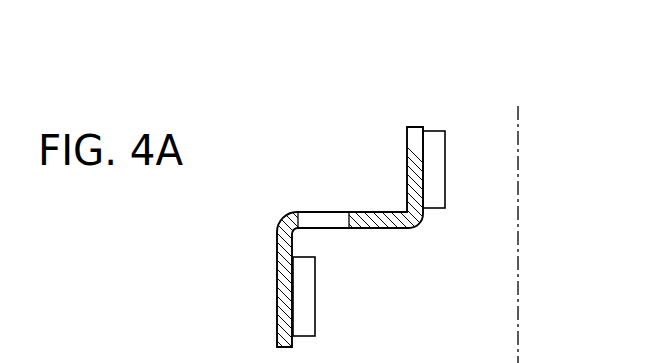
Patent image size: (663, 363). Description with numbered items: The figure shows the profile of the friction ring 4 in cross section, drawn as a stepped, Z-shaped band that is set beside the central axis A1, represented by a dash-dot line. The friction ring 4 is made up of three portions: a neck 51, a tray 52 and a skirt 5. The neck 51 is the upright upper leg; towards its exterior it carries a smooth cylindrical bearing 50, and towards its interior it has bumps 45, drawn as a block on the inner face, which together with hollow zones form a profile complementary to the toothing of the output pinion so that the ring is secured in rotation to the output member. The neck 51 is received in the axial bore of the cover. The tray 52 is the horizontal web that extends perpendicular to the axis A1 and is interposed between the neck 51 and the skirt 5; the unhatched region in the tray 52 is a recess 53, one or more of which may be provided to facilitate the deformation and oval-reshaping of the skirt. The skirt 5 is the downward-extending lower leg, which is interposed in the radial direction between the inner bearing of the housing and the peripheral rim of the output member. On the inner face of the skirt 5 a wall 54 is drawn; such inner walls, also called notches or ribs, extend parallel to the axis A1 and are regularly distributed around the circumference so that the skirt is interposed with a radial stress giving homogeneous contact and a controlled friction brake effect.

The friction ring 4 is at (306, 120).
The skirt 5 is at (266, 282).
The smooth cylindrical bearing 50 is at (405, 165).
The neck 51 is at (421, 111).
The tray 52 is at (372, 210).
The recess 53 is at (327, 218).
The inner wall 54 is at (305, 298).
The bump 45 is at (435, 198).
The axis A1 is at (517, 220).